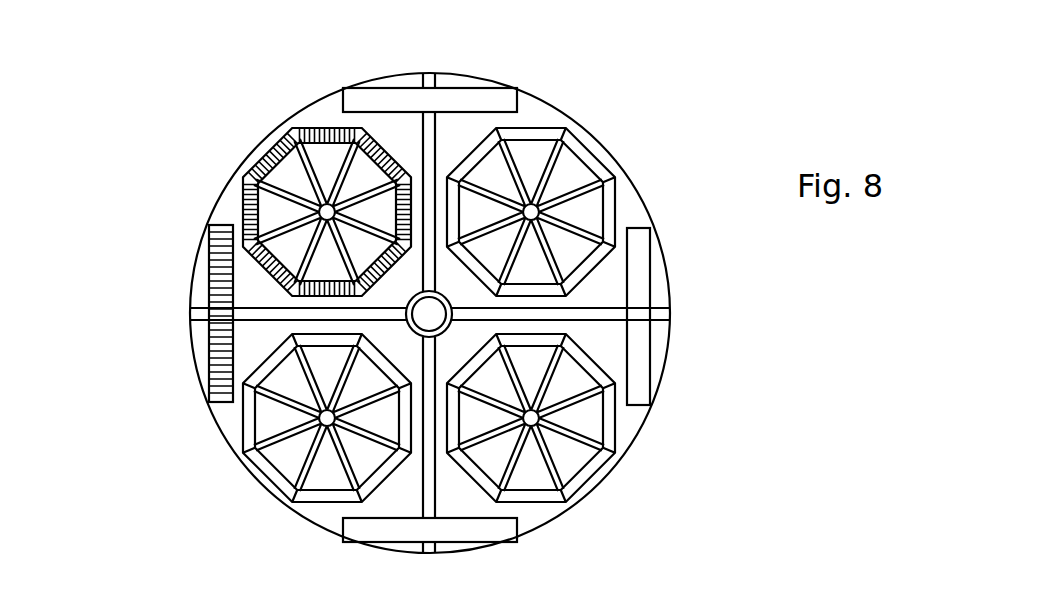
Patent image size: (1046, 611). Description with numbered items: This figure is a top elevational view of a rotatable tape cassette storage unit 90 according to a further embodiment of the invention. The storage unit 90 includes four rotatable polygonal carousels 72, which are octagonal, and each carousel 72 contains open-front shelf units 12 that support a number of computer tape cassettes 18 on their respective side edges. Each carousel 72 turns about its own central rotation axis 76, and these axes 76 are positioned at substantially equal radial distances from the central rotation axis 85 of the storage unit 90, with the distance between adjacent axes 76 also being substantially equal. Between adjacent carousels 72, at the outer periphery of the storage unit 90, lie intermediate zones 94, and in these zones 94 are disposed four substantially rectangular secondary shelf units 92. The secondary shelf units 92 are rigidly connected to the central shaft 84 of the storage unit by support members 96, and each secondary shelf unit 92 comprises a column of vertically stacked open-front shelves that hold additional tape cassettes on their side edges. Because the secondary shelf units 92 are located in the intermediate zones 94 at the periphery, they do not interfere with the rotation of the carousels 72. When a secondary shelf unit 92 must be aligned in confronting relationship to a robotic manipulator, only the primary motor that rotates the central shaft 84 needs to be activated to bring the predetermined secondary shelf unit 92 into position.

The open-front shelf unit 12 is at (572, 148).
The tape cassettes 18 is at (317, 128).
The rotatable polygonal carousel 72 is at (273, 212).
The central rotation axis 76 is at (533, 222).
The central shaft 84 is at (408, 300).
The central rotation axis 85 is at (431, 319).
The rotatable storage unit 90 is at (146, 399).
The secondary shelf unit 92 is at (463, 92).
The intermediate zone 94 is at (250, 335).
The support member 96 is at (437, 160).